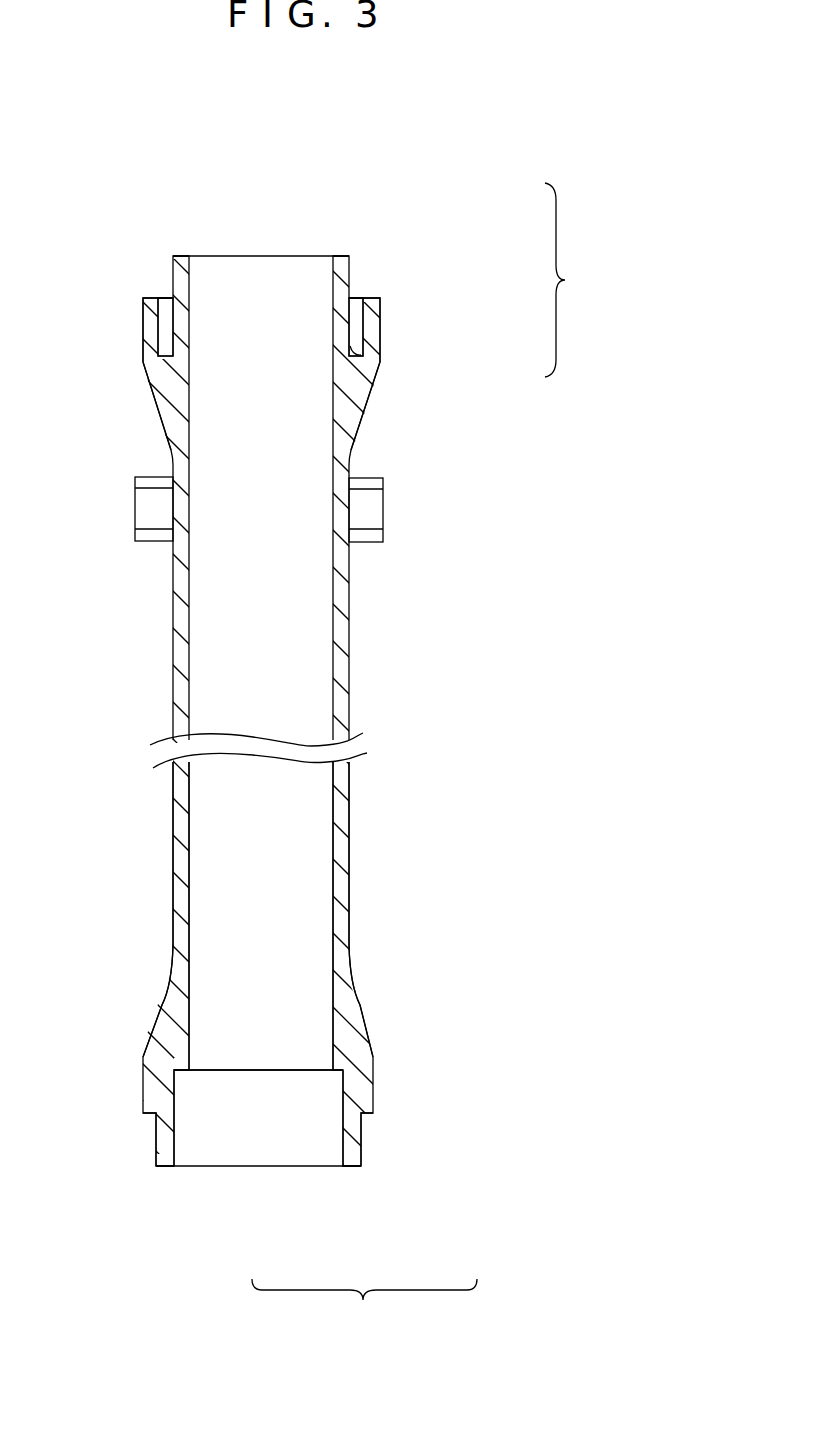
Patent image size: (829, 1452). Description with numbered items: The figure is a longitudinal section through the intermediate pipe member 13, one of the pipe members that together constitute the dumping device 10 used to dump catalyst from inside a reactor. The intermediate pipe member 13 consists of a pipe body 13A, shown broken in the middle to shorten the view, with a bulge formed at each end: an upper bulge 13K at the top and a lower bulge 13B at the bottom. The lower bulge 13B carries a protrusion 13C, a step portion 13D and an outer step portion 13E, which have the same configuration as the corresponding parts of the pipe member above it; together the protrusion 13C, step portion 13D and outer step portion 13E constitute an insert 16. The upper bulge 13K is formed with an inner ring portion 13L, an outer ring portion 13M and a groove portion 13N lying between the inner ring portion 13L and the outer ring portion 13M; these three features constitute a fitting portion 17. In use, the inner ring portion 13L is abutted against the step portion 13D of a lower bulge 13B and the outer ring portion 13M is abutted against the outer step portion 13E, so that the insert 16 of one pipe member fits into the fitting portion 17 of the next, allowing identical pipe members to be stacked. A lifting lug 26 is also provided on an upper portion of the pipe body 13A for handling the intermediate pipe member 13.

The dumping device 10 is at (315, 193).
The intermediate pipe member 13 is at (348, 668).
The pipe body 13A is at (345, 805).
The lower bulge 13B is at (357, 1040).
The protrusion 13C is at (345, 1166).
The step portion 13D is at (340, 1072).
The outer step portion 13E is at (363, 1118).
The upper bulge 13K is at (349, 413).
The inner ring portion 13L is at (342, 260).
The outer ring portion 13M is at (373, 325).
The groove portion 13N is at (371, 340).
The insert 16 is at (310, 1203).
The fitting portion 17 is at (573, 280).
The lifting lug 26 is at (373, 512).